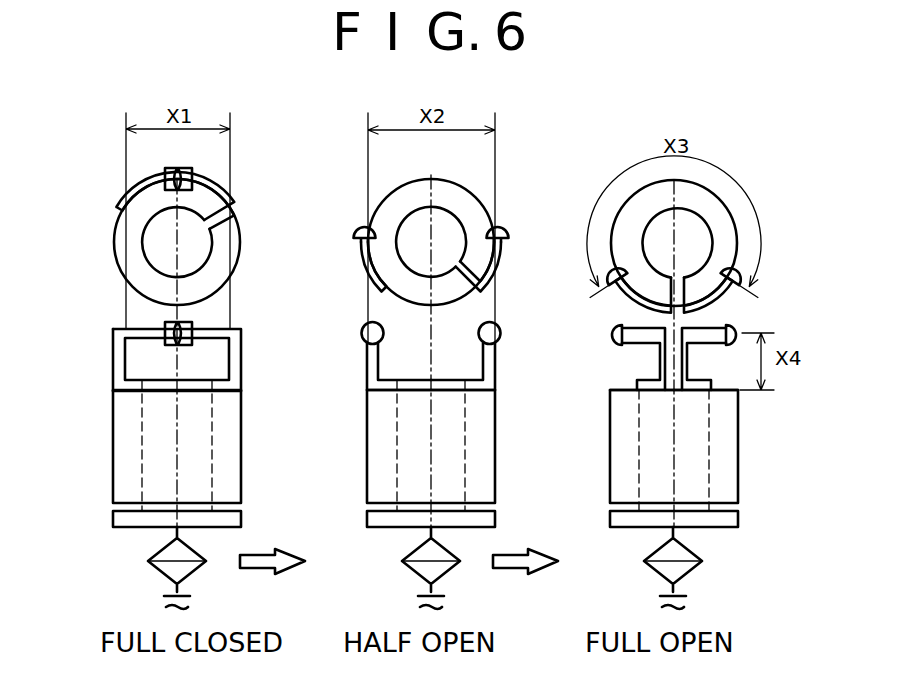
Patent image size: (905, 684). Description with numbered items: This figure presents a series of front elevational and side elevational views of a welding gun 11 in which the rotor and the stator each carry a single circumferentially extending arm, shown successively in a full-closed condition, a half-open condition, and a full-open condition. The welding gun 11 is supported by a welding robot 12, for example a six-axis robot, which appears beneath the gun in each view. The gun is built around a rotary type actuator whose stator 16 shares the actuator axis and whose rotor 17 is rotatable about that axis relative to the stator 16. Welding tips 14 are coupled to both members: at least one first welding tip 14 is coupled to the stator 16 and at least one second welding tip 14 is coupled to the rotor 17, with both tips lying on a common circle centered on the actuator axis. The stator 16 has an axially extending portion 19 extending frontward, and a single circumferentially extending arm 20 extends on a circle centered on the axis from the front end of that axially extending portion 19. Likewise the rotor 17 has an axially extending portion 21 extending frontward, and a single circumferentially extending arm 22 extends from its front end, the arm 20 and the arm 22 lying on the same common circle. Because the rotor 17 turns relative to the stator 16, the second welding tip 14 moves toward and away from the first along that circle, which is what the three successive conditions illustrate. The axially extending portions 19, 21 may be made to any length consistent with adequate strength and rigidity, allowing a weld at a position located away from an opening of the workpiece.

The welding gun 11 is at (241, 476).
The welding robot 12 is at (148, 558).
The welding tip 14 is at (177, 168).
The stator 16 is at (148, 236).
The rotor 17 is at (132, 258).
The axially extending portion 19 is at (241, 364).
The circumferentially extending arm 20 is at (226, 178).
The axially extending portion 21 is at (113, 362).
The circumferentially extending arm 22 is at (120, 205).